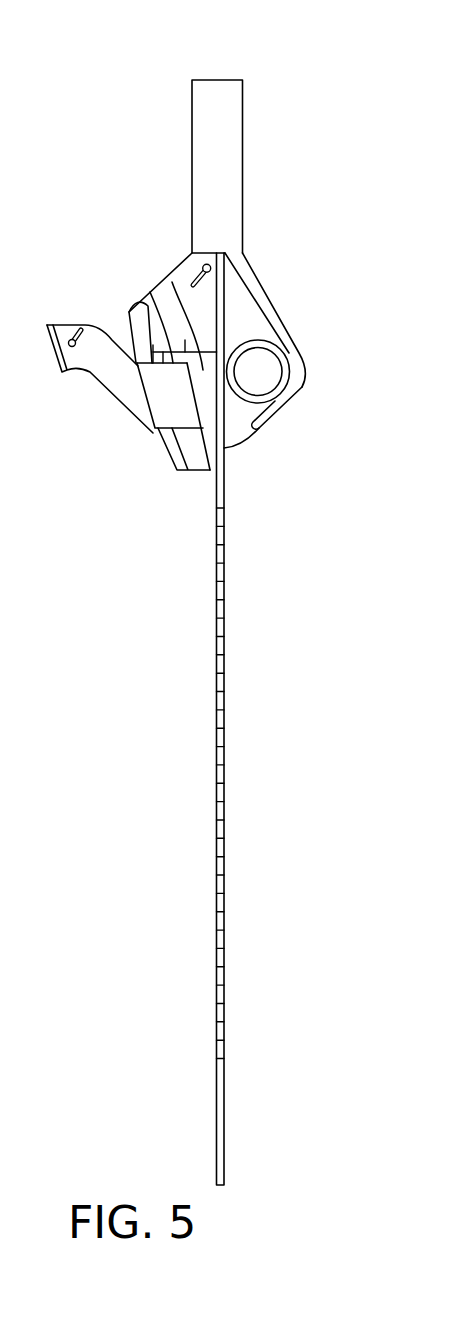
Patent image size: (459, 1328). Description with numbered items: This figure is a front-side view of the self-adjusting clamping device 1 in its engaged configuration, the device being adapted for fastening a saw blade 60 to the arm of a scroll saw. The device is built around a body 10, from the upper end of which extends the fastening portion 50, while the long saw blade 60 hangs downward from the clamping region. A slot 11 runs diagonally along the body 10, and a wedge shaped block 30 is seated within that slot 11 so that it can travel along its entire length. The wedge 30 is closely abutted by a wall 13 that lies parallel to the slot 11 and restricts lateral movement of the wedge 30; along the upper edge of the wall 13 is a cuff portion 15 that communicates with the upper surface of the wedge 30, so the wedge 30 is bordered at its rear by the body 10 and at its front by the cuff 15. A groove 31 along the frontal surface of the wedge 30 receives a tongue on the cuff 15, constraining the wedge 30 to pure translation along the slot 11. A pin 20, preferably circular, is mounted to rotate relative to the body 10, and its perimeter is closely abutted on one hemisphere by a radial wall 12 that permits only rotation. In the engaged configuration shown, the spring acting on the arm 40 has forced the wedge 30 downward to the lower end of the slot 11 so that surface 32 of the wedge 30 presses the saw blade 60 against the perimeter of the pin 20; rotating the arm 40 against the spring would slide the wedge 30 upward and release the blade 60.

The self-adjusting clamping device 1 is at (103, 92).
The body 10 is at (185, 56).
The fastening portion 50 is at (225, 133).
The wedge shaped block 30 is at (180, 268).
The slot 11 is at (135, 287).
The wall 13 is at (128, 315).
The pin 20 is at (264, 367).
The radial wall 12 is at (298, 381).
The surface of wedge 32 is at (230, 454).
The arm 40 is at (118, 380).
The cuff portion 15 is at (170, 417).
The groove 31 is at (200, 463).
The saw blade 60 is at (227, 640).